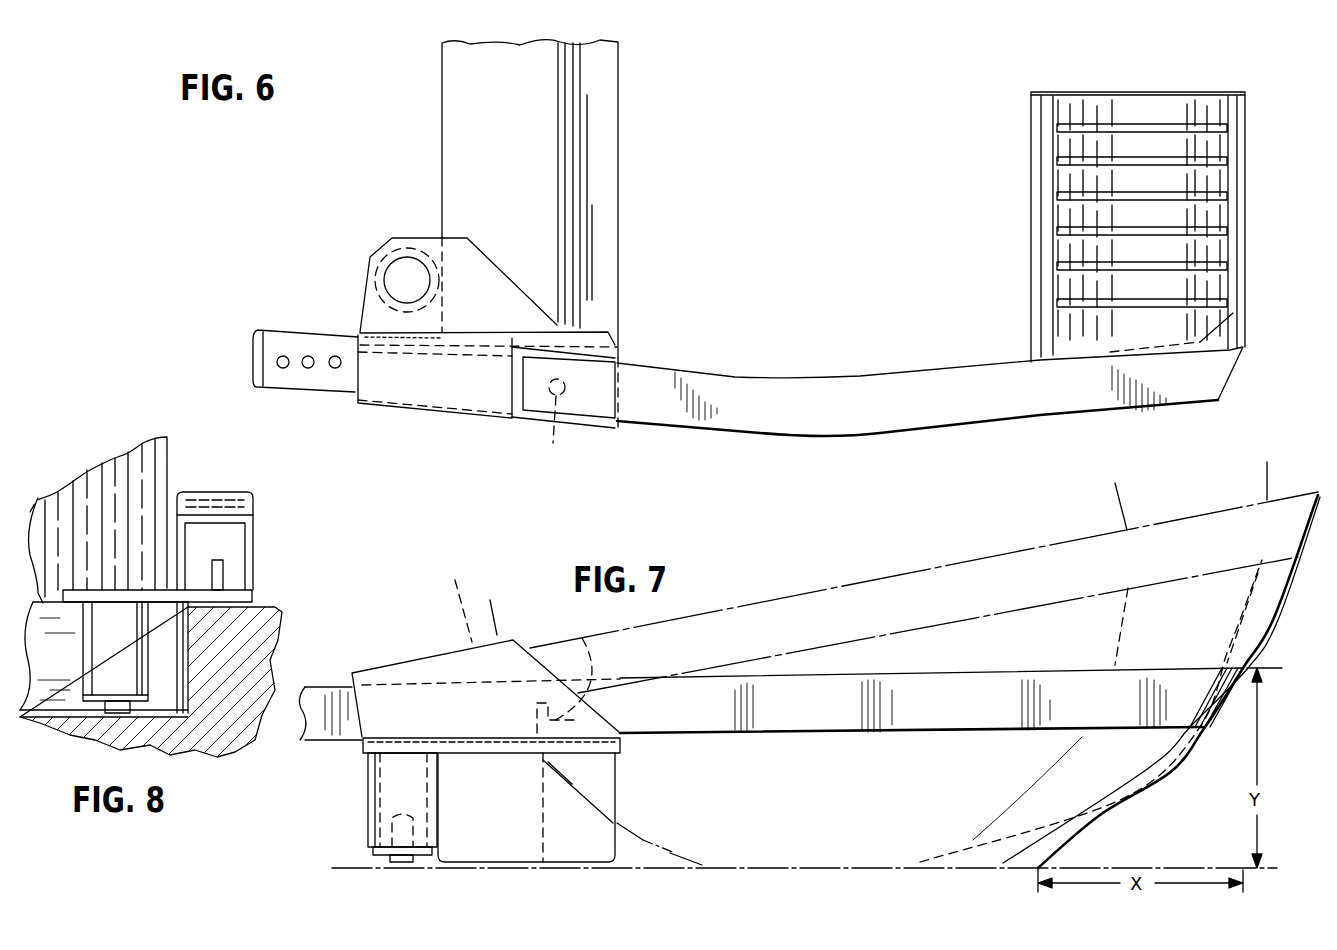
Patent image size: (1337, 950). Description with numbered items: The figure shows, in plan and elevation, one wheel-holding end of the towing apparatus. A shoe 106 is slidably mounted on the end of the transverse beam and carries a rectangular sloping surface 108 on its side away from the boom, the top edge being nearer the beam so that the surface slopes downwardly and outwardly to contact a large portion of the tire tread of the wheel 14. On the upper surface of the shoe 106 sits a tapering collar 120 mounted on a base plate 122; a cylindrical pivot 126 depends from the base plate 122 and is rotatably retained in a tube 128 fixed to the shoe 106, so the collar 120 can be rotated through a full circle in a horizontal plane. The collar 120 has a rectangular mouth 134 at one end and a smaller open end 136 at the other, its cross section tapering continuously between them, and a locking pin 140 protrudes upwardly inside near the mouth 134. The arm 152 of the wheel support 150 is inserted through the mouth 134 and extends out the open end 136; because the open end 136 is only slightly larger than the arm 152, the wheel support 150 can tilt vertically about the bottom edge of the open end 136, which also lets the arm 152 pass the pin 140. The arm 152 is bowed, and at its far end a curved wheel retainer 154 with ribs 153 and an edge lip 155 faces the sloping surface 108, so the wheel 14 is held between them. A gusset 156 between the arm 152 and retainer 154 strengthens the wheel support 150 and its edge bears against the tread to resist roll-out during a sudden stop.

In FIG. 8, the wheel 14 is at (140, 446).
In FIG. 7, the wheel 14 is at (1056, 681).
In FIG. 8, the shoe 106 is at (104, 659).
In FIG. 7, the shoe 106 is at (526, 807).
In FIG. 6, the sloping surface 108 is at (606, 170).
In FIG. 7, the sloping surface 108 is at (588, 807).
In FIG. 6, the tapering collar 120 is at (468, 395).
In FIG. 8, the tapering collar 120 is at (240, 507).
In FIG. 7, the tapering collar 120 is at (468, 670).
In FIG. 6, the base plate 122 is at (490, 275).
In FIG. 8, the base plate 122 is at (262, 606).
In FIG. 7, the base plate 122 is at (365, 748).
In FIG. 7, the cylindrical pivot 126 is at (395, 787).
In FIG. 8, the tube 128 is at (115, 657).
In FIG. 7, the tube 128 is at (373, 813).
In FIG. 6, the mouth 134 is at (594, 402).
In FIG. 6, the open end 136 is at (355, 382).
In FIG. 8, the open end 136 is at (232, 540).
In FIG. 6, the locking pin 140 is at (548, 448).
In FIG. 8, the locking pin 140 is at (225, 573).
In FIG. 7, the locking pin 140 is at (564, 673).
In FIG. 6, the wheel support 150 is at (821, 318).
In FIG. 7, the wheel support 150 is at (858, 580).
In FIG. 6, the arm 152 is at (930, 391).
In FIG. 7, the arm 152 is at (771, 704).
In FIG. 6, the ribs 153 is at (1072, 190).
In FIG. 6, the wheel retainer 154 is at (1228, 284).
In FIG. 7, the wheel retainer 154 is at (1145, 797).
In FIG. 6, the lip 155 is at (1163, 90).
In FIG. 6, the gusset 156 is at (1230, 334).